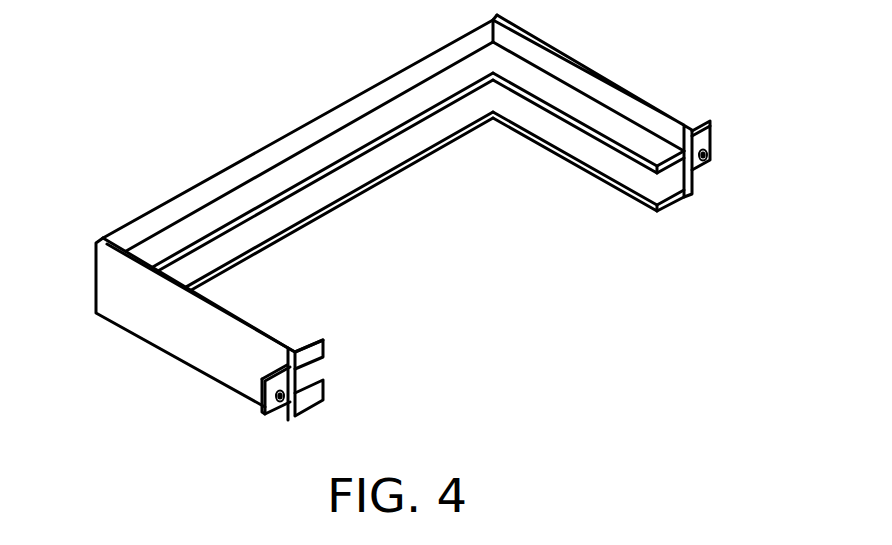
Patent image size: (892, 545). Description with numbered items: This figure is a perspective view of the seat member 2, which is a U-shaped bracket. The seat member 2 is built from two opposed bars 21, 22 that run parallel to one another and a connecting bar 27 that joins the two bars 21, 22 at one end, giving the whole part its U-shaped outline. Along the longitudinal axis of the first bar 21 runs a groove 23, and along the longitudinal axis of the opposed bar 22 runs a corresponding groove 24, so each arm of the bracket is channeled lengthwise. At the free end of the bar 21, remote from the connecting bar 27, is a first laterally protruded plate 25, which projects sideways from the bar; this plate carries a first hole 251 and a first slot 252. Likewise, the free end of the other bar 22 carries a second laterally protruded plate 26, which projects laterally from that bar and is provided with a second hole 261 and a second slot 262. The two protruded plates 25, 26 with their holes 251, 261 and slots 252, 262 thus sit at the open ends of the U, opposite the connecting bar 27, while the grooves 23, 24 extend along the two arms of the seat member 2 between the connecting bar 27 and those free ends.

The seat member 2 is at (625, 269).
The bar 21 is at (612, 83).
The bar 22 is at (178, 363).
The groove 23 is at (588, 143).
The groove 24 is at (325, 388).
The first laterally protruded plate 25 is at (738, 134).
The first hole 251 is at (708, 158).
The first slot 252 is at (724, 92).
The second laterally protruded plate 26 is at (234, 418).
The second hole 261 is at (279, 401).
The second slot 262 is at (315, 354).
The connecting bar 27 is at (272, 178).